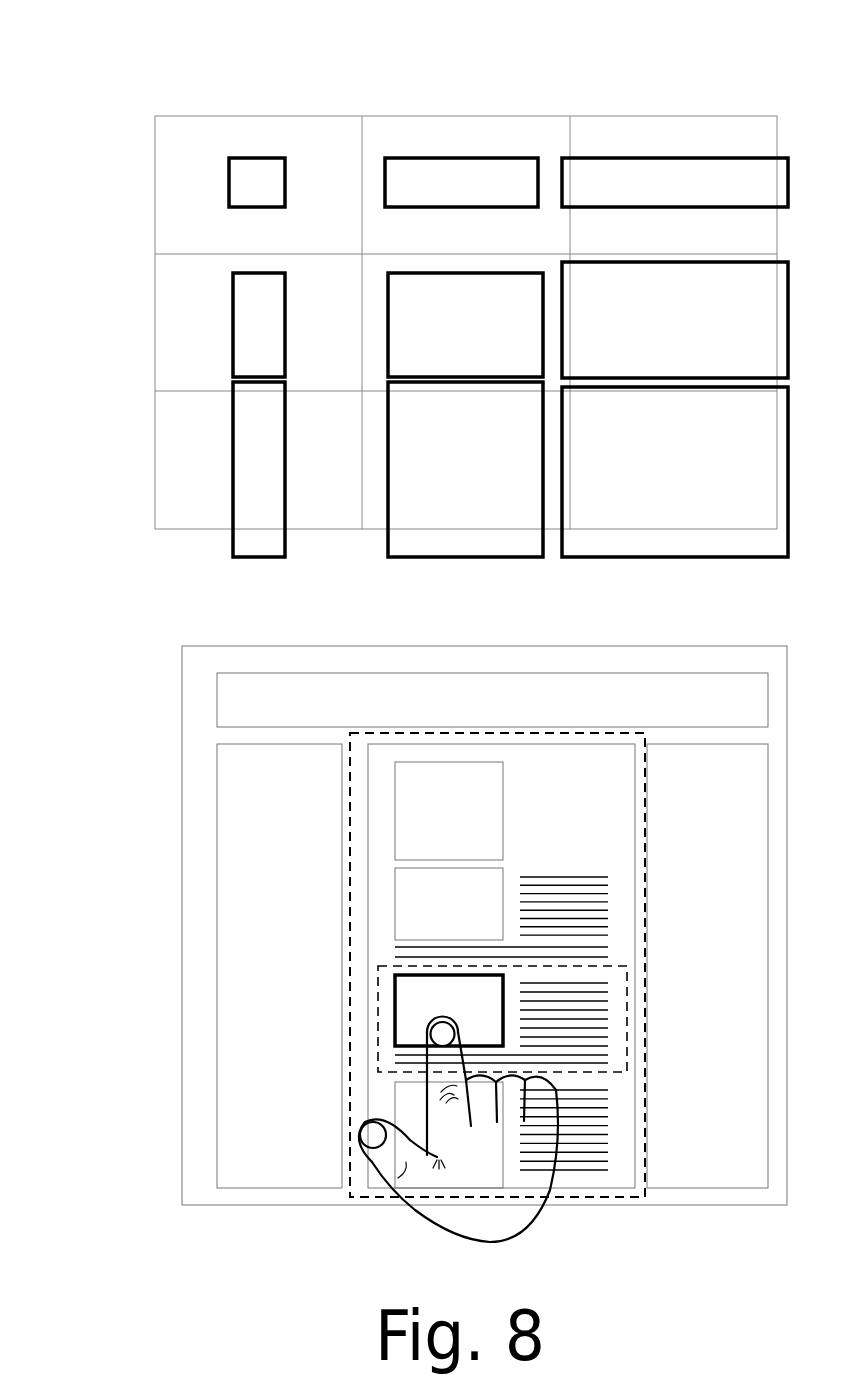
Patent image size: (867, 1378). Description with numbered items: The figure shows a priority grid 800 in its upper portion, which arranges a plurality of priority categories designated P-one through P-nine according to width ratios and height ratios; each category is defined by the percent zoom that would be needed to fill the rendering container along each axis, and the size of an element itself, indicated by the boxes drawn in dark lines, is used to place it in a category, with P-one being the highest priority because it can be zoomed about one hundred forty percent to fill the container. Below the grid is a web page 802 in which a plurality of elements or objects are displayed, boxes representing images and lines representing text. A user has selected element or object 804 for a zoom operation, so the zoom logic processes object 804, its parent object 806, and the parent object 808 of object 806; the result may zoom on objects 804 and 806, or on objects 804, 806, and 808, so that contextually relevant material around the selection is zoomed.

The priority grid 800 is at (175, 36).
The web page 802 is at (199, 598).
The element or object 804 is at (449, 1010).
The parent object 806 is at (371, 950).
The parent object 808 is at (389, 719).